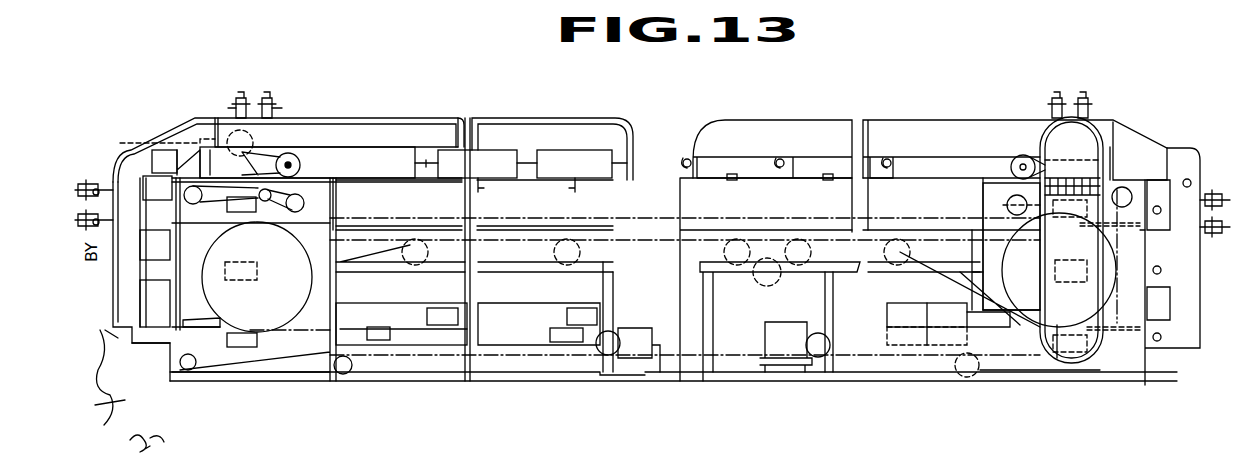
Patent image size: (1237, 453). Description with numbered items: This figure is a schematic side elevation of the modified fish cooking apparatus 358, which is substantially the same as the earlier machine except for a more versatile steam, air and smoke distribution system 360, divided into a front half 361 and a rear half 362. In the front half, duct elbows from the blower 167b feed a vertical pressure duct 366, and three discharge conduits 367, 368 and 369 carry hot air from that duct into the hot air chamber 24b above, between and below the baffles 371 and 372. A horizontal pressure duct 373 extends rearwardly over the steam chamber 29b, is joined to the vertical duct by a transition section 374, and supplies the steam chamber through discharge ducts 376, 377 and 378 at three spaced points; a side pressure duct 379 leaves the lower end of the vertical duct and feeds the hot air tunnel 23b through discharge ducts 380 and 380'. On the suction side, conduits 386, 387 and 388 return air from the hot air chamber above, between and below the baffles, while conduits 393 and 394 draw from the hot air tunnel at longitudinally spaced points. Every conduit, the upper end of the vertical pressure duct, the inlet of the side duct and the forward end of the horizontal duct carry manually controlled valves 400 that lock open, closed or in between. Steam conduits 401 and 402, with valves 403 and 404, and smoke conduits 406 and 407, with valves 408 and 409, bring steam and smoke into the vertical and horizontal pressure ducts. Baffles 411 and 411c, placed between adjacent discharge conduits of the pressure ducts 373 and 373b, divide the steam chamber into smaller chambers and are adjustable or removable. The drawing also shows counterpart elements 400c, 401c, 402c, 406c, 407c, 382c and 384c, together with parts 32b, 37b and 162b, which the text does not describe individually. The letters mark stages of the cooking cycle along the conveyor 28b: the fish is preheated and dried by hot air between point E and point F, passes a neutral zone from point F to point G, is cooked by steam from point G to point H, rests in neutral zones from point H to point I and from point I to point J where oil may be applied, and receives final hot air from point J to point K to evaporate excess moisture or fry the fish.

The modified fish cooking apparatus 358 is at (888, 109).
The steam, air, and smoke distribution system 360 is at (619, 116).
The front half 361 is at (364, 114).
The rear half 362 is at (755, 113).
The vertical pressure duct 366 is at (132, 148).
The discharge conduit 367 is at (155, 208).
The discharge conduit 368 is at (160, 262).
The discharge conduit 369 is at (122, 338).
The baffle 371 is at (228, 216).
The baffle 372 is at (208, 318).
The horizontal pressure duct 373 is at (433, 124).
The horizontal pressure duct 373b is at (932, 125).
The transition section 374 is at (185, 128).
The discharge duct 376 is at (420, 150).
The discharge duct 377 is at (522, 152).
The discharge duct 378 is at (612, 152).
The side pressure duct 379 is at (149, 360).
The discharge duct 380 is at (400, 306).
The discharge duct 380' is at (544, 290).
The plate 382c is at (1092, 303).
The box 384c is at (993, 318).
The conduit 386 is at (235, 213).
The conduit 387 is at (257, 267).
The conduit 388 is at (257, 343).
The conduit 393 is at (430, 310).
The conduit 394 is at (588, 297).
The valve 400 is at (130, 172).
The duct hook 400c is at (778, 160).
The steam conduit 401 is at (86, 182).
The valve 401c is at (1210, 206).
The steam conduit 402 is at (236, 98).
The valve 402c is at (1086, 97).
The valve 403 is at (96, 188).
The valve 404 is at (228, 105).
The smoke conduit 406 is at (110, 228).
The fitting 406c is at (1212, 234).
The smoke conduit 407 is at (268, 94).
The valve 407c is at (1056, 97).
The valve 408 is at (100, 226).
The valve 409 is at (278, 105).
The baffle 411 is at (572, 195).
The baffle 411c is at (826, 180).
The pulley 162b is at (1015, 180).
The blower 167b is at (292, 134).
The hot air tunnel 23b is at (490, 310).
The hot air chamber 24b is at (259, 378).
The conveyor 28b is at (905, 250).
The steam chamber 29b is at (381, 176).
The chamber 32b is at (1001, 225).
The box 37b is at (924, 303).
The point E is at (608, 350).
The point F is at (215, 345).
The point G is at (257, 277).
The point H is at (1070, 240).
The point I is at (1064, 333).
The point J is at (1030, 340).
The point K is at (828, 352).